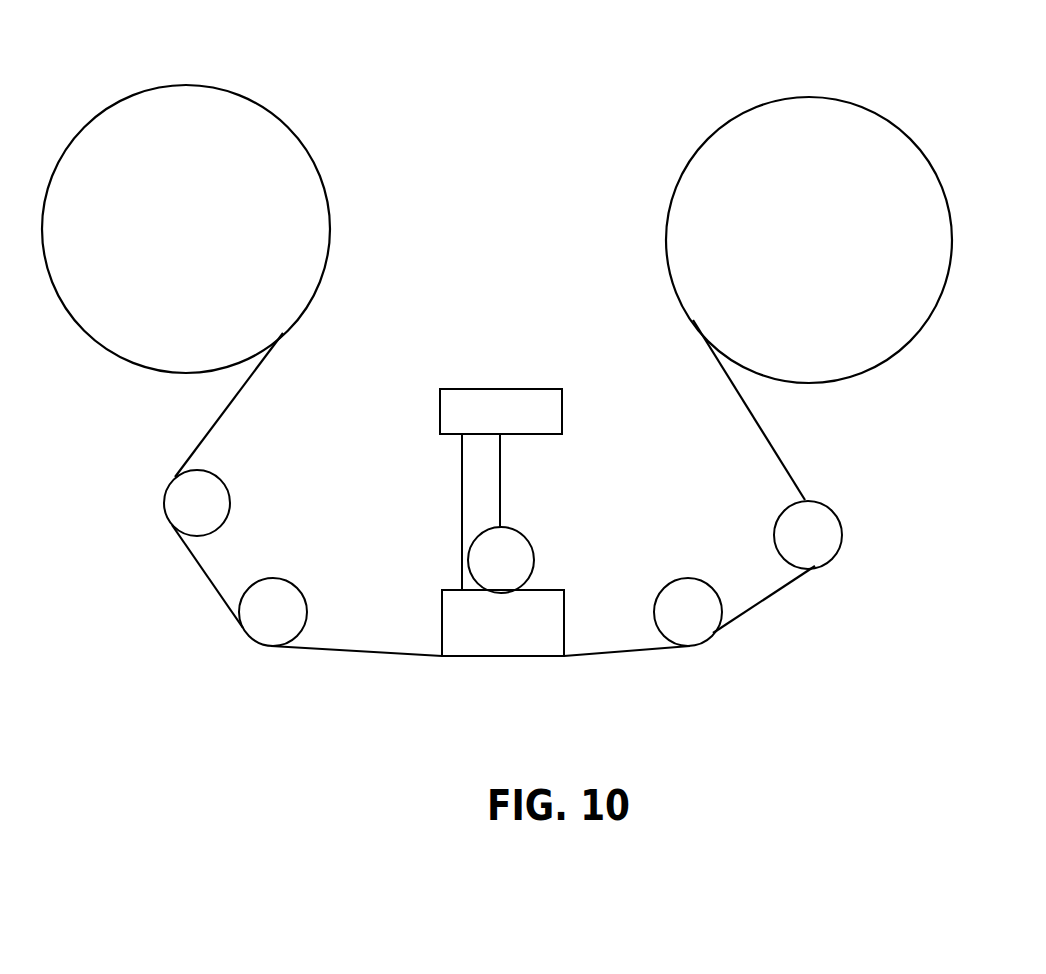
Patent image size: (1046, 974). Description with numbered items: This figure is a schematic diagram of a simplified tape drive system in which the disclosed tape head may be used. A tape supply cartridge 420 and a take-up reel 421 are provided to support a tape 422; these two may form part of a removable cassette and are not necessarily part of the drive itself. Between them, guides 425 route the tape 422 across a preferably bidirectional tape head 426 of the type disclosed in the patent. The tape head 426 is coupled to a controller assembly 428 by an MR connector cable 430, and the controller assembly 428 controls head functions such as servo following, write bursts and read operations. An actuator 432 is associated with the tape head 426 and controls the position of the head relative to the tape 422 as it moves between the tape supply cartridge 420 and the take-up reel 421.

The tape supply cartridge 420 is at (315, 166).
The take-up reel 421 is at (807, 93).
The tape 422 is at (362, 655).
The guides 425 is at (230, 492).
The tape head 426 is at (568, 618).
The controller assembly 428 is at (500, 388).
The MR connector cable 430 is at (465, 560).
The actuator 432 is at (527, 535).